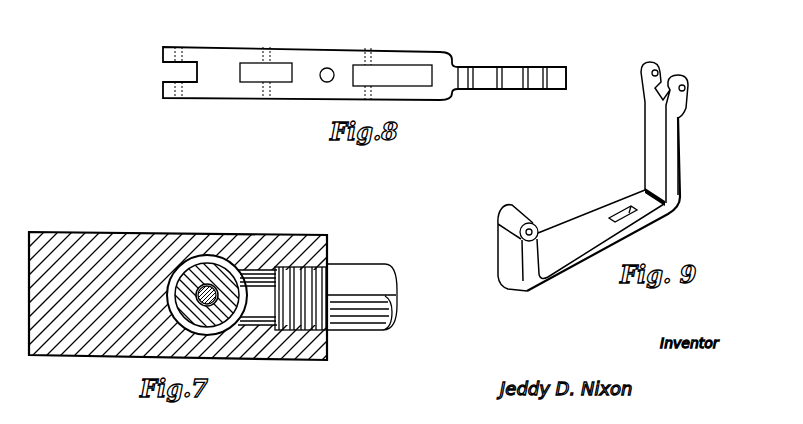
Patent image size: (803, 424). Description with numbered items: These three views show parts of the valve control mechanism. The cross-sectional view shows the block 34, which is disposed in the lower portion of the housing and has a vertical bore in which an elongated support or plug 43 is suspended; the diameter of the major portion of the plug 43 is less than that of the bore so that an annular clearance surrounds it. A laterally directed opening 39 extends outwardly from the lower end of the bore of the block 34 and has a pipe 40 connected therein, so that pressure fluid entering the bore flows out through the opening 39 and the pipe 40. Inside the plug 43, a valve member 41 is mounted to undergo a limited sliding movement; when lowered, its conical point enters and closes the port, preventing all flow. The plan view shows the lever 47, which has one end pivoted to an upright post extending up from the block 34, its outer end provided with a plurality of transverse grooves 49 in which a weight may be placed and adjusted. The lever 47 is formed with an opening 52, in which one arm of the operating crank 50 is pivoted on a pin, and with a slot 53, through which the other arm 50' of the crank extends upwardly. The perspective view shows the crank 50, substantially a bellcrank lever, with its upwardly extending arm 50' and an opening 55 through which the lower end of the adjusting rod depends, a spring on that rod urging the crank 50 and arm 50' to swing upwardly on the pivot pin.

In FIG. 7, the block 34 is at (133, 245).
In FIG. 7, the laterally directed opening 39 is at (263, 272).
In FIG. 7, the pipe 40 is at (358, 278).
In FIG. 7, the valve member 41 is at (212, 305).
In FIG. 7, the plug 43 is at (207, 270).
In FIG. 8, the lever 47 is at (228, 62).
In FIG. 8, the transverse grooves 49 is at (543, 70).
In FIG. 9, the operating crank 50 is at (589, 218).
In FIG. 9, the crank arm 50' is at (683, 134).
In FIG. 8, the opening 52 is at (278, 62).
In FIG. 8, the slot 53 is at (388, 72).
In FIG. 9, the opening 55 is at (620, 211).